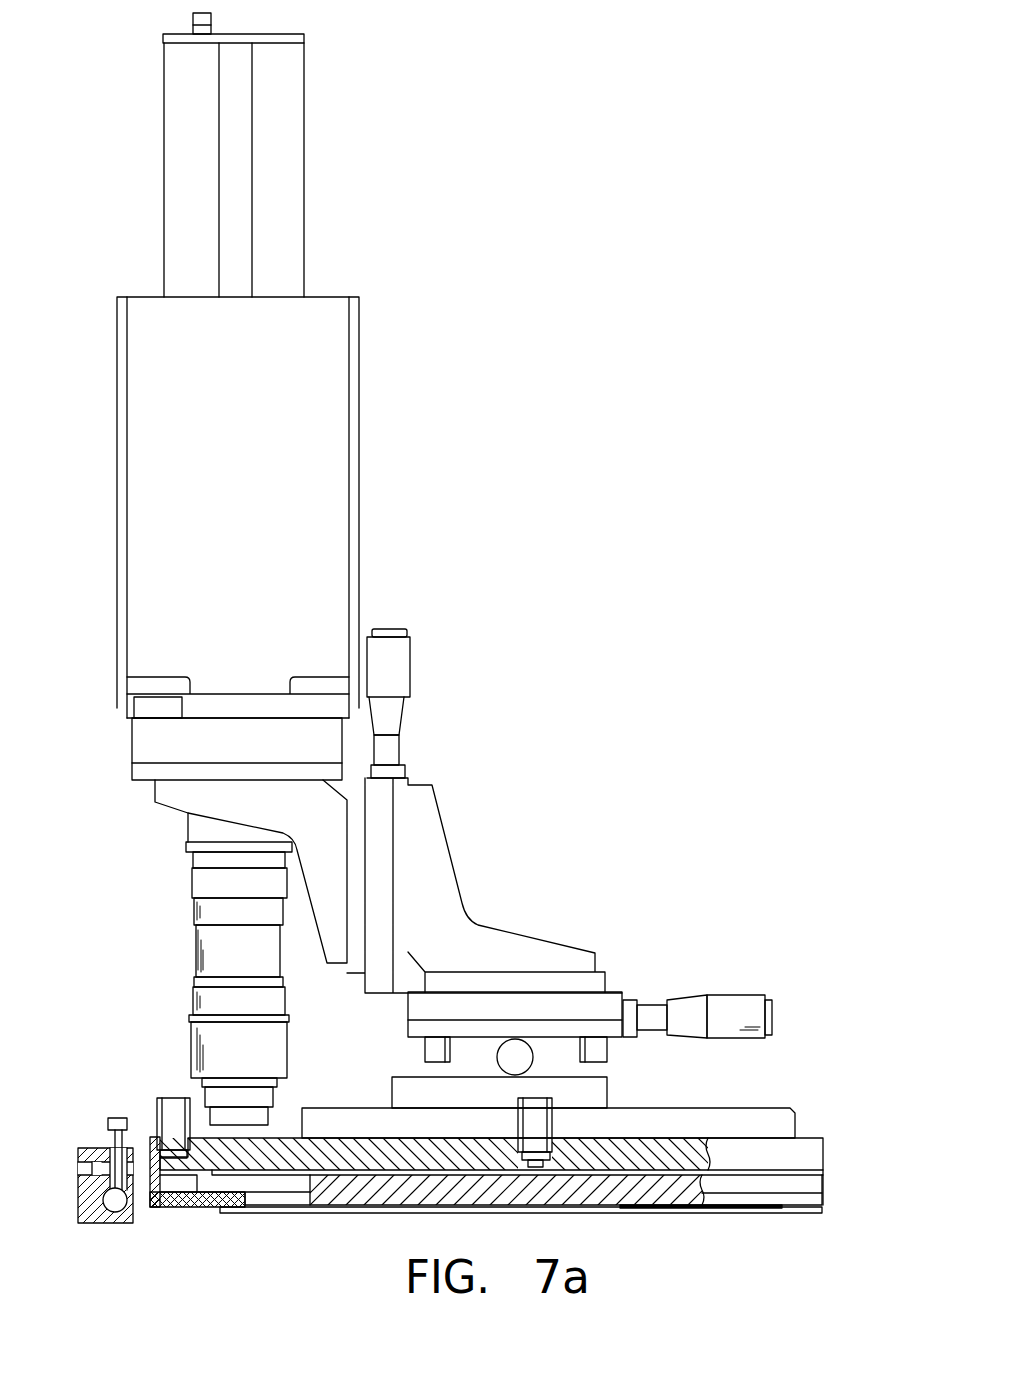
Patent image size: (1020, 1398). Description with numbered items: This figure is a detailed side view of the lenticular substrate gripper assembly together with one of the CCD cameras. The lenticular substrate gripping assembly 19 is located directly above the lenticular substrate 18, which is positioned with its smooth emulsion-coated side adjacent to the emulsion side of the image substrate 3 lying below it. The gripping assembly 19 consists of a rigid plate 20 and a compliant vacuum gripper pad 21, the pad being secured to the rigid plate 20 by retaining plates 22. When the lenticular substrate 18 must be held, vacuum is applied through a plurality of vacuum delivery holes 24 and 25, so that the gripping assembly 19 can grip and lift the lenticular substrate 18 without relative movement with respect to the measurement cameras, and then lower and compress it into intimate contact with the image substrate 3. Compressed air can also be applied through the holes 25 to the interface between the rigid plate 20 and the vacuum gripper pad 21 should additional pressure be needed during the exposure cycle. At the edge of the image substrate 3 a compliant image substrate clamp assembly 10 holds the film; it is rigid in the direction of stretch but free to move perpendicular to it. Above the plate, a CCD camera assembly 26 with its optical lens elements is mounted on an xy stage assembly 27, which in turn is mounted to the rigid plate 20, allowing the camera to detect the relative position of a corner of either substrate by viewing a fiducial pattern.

The image substrate 3 is at (140, 1212).
The compliant image substrate clamp assembly 10 is at (80, 1138).
The lenticular substrate 18 is at (260, 1210).
The lenticular substrate gripping assembly 19 is at (857, 1180).
The rigid plate 20 is at (823, 1152).
The compliant vacuum gripper pad 21 is at (823, 1188).
The retaining plate 22 is at (193, 1208).
The vacuum delivery hole 24 is at (177, 1098).
The vacuum/air delivery hole 25 is at (555, 1126).
The CCD camera assembly 26 is at (112, 510).
The xy stage assembly 27 is at (470, 860).